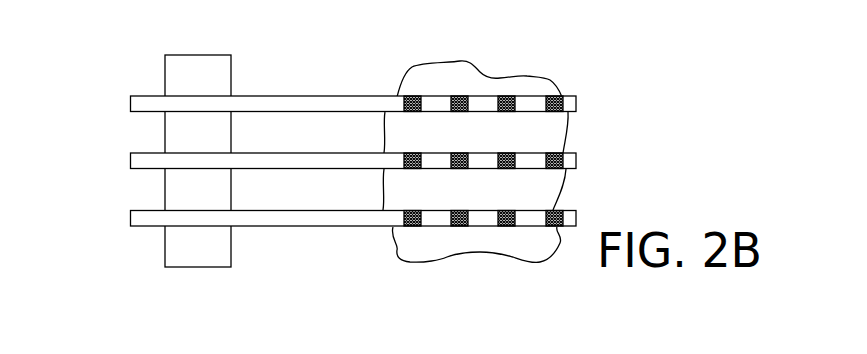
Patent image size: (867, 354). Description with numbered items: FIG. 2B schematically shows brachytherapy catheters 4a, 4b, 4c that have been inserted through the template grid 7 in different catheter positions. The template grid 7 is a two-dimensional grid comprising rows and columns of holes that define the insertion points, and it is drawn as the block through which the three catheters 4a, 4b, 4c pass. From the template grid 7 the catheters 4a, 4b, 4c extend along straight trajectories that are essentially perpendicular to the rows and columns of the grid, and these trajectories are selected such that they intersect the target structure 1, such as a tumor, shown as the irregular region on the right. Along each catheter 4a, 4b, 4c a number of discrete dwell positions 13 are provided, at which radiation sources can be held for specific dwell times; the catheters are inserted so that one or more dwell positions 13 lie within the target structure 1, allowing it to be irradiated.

The target structure 1 is at (547, 78).
The catheter 4a is at (130, 100).
The catheter 4b is at (130, 217).
The catheter 4c is at (130, 157).
The template grid 7 is at (231, 76).
The dwell position 13 is at (415, 105).